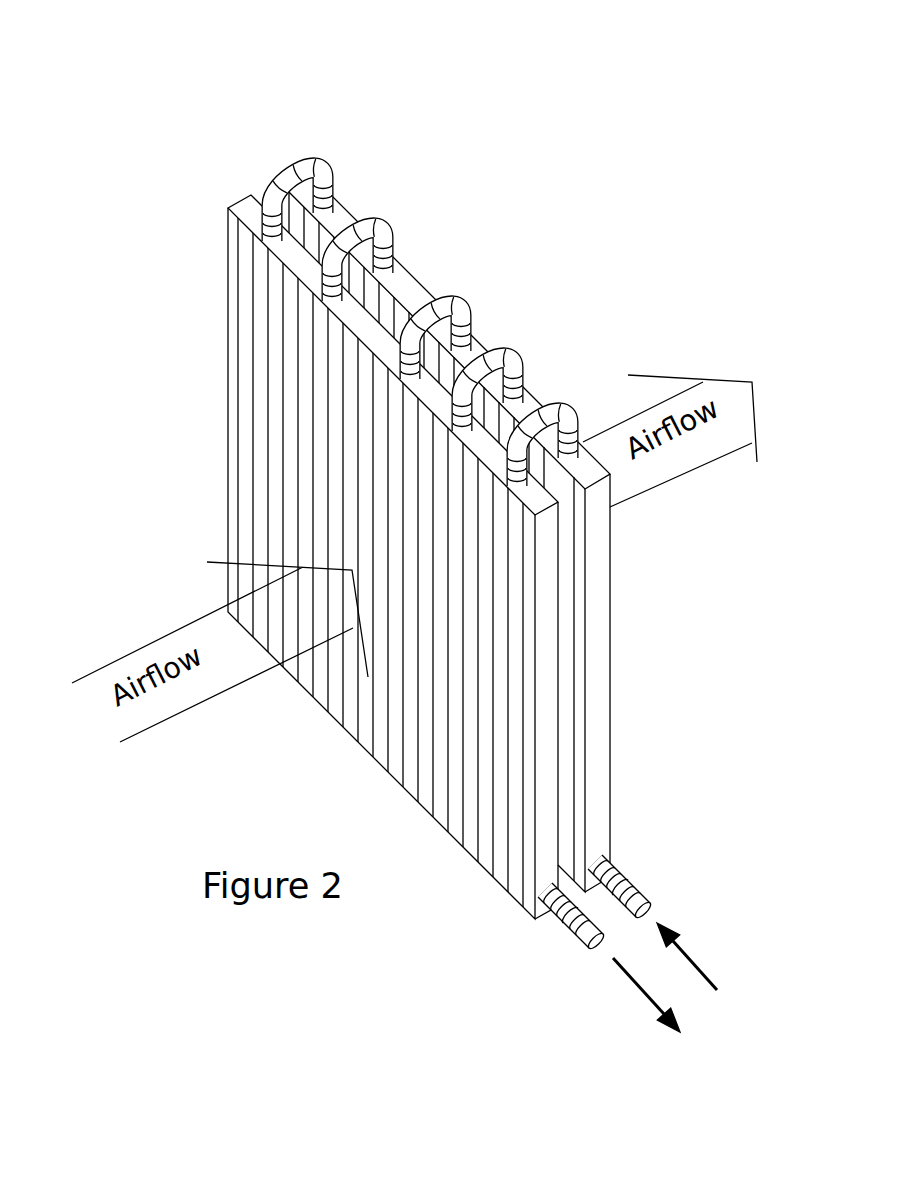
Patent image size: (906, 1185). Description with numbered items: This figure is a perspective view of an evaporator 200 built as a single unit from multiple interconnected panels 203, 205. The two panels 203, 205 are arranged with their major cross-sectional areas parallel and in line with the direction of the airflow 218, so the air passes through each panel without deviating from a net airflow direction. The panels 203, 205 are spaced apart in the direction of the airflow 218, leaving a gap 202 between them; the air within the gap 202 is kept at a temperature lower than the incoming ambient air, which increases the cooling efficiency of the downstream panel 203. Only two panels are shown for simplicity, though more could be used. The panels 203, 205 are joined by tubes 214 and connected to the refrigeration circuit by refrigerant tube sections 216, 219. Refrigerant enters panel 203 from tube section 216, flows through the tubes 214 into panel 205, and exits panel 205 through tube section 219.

The evaporator 200 is at (437, 267).
The gap 202 is at (250, 185).
The panel 203 is at (612, 787).
The panel 205 is at (327, 712).
The tubes 214 is at (385, 233).
The refrigerant tube section 216 is at (620, 895).
The airflow 218 is at (222, 640).
The refrigerant tube section 219 is at (568, 930).